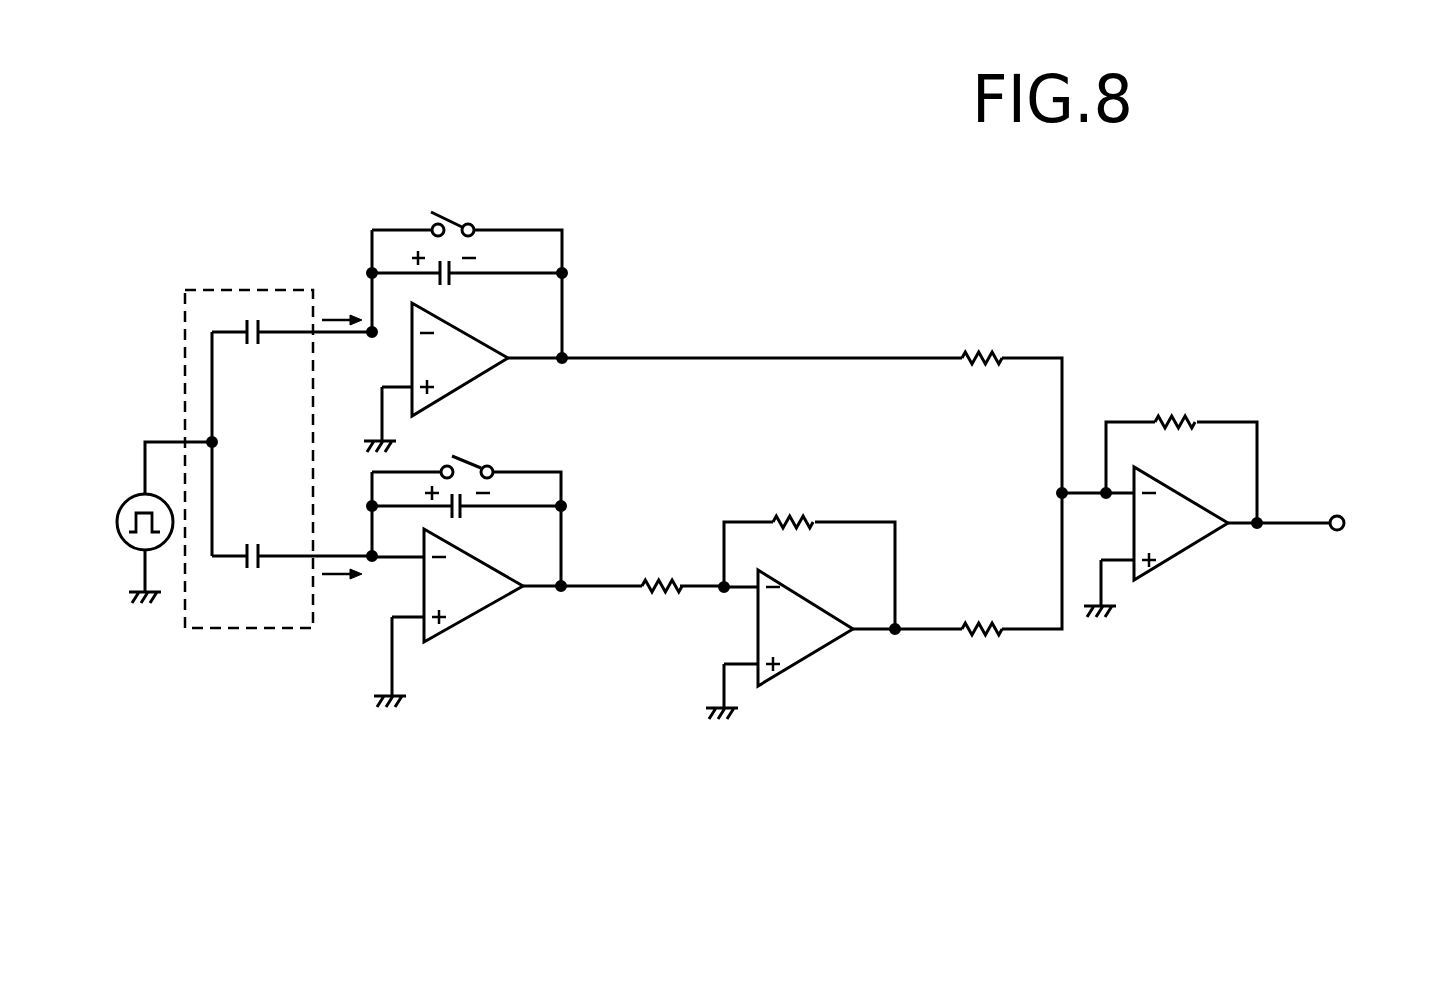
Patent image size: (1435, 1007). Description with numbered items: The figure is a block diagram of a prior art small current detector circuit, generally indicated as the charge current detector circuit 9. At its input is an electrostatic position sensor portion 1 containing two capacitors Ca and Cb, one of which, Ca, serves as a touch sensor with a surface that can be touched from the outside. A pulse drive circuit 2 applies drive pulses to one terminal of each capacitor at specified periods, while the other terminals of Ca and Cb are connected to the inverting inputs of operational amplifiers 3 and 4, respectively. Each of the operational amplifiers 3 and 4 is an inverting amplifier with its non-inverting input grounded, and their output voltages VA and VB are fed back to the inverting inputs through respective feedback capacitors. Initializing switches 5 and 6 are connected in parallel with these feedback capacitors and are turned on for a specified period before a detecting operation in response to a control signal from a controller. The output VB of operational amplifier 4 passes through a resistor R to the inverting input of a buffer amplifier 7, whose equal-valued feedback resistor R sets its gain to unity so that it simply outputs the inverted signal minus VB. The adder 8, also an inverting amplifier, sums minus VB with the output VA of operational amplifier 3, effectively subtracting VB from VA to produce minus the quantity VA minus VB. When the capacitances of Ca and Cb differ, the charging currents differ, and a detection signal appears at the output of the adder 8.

The electrostatic position sensor portion 1 is at (208, 300).
The pulse drive circuit 2 is at (117, 527).
The operational amplifier 3 is at (465, 300).
The operational amplifier 4 is at (488, 556).
The initializing switch 5 is at (451, 218).
The initializing switch 6 is at (479, 462).
The buffer amplifier 7 is at (810, 605).
The adder 8 is at (1199, 502).
The charge current detector circuit 9 is at (984, 436).